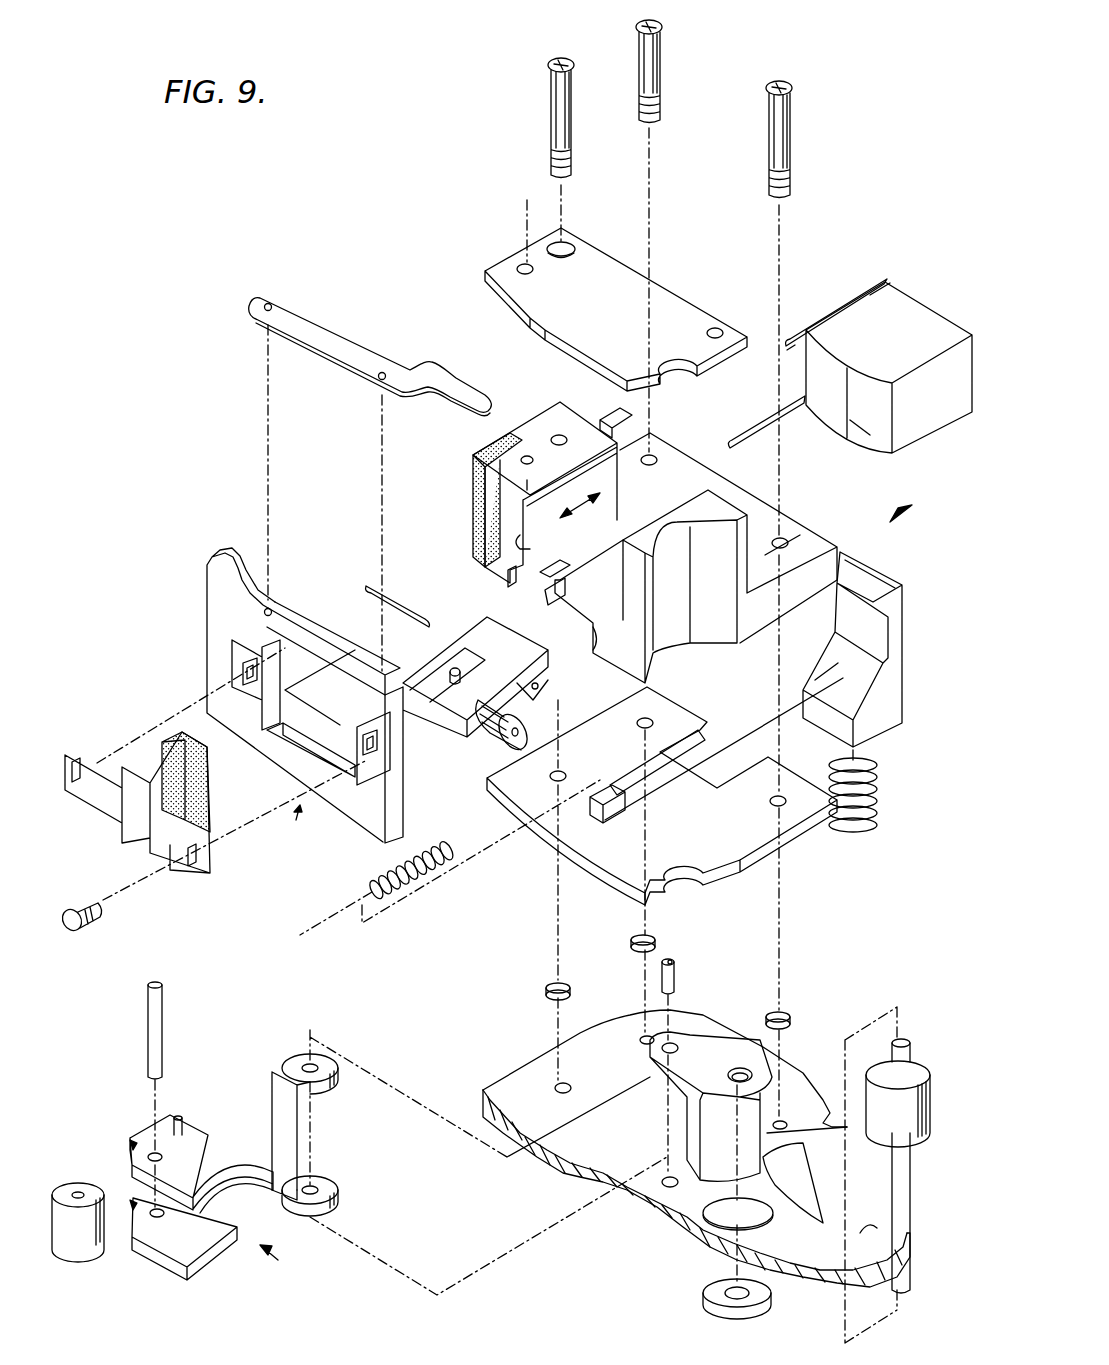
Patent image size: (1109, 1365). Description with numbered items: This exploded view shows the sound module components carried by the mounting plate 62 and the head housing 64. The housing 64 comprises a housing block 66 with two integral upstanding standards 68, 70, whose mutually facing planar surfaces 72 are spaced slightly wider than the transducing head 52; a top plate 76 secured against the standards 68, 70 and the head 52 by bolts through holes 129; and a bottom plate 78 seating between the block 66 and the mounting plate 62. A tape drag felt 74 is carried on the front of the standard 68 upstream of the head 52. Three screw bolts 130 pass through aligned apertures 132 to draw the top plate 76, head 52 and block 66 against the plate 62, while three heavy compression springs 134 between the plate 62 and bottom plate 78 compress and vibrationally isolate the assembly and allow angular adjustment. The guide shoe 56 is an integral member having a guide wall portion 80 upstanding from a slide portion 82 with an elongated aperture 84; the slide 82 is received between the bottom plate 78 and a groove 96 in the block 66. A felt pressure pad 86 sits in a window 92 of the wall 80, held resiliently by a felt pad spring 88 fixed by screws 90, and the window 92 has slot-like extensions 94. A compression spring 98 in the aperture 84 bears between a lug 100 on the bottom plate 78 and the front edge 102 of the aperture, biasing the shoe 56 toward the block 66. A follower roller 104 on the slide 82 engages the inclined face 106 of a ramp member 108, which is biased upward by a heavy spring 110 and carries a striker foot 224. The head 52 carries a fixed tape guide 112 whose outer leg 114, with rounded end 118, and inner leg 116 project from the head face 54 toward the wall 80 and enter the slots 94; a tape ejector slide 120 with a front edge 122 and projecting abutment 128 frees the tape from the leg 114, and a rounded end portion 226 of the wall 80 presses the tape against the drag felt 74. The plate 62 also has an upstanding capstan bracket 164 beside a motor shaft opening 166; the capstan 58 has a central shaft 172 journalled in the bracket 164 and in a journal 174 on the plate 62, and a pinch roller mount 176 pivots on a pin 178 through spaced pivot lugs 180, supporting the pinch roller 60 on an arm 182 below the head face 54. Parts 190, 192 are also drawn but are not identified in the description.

The transducing head 52 is at (870, 334).
The head face 54 is at (862, 440).
The guide shoe 56 is at (297, 815).
The capstan 58 is at (920, 1088).
The pinch roller 60 is at (95, 1240).
The mounting plate 62 is at (655, 1215).
The head housing 64 is at (895, 515).
The housing block 66 is at (797, 535).
The standard 68 is at (585, 447).
The standard 70 is at (690, 512).
The planar surfaces 72 is at (633, 435).
The tape drag felt 74 is at (472, 500).
The top plate 76 is at (588, 310).
The bottom plate 78 is at (681, 826).
The guide wall portion 80 is at (330, 650).
The slide portion 82 is at (418, 737).
The elongated aperture 84 is at (440, 660).
The felt pressure pad 86 is at (210, 788).
The felt pad spring 88 is at (150, 835).
The screws 90 is at (90, 925).
The window 92 is at (318, 680).
The slot-like extensions 94 is at (275, 612).
The groove 96 is at (594, 652).
The compression spring 98 is at (368, 885).
The lug 100 is at (600, 815).
The front edge 102 is at (462, 665).
The follower roller 104 is at (487, 738).
The inclined face 106 is at (855, 688).
The ramp member 108 is at (900, 628).
The compression spring 110 is at (878, 792).
The fixed tape guide 112 is at (868, 290).
The outer leg 114 is at (797, 335).
The inner leg 116 is at (752, 438).
The rounded free end 118 is at (787, 352).
The tape ejector slide 120 is at (605, 508).
The front edge 122 is at (530, 545).
The projecting abutment 128 is at (508, 585).
The holes 129 is at (522, 262).
The screw bolts 130 is at (565, 108).
The apertures 132 is at (562, 436).
The compression springs 134 is at (630, 940).
The capstan bracket 164 is at (715, 1050).
The motor shaft opening 166 is at (860, 1232).
The central shaft 172 is at (912, 1176).
The journal 174 is at (765, 1308).
The pinch roller mount 176 is at (278, 1260).
The pin 178 is at (680, 978).
The pivot lugs 180 is at (332, 1078).
The arm 182 is at (230, 1168).
The pin 190 is at (182, 1120).
The lever 192 is at (445, 418).
The striker foot 224 is at (882, 572).
The rounded end portion 226 is at (242, 560).